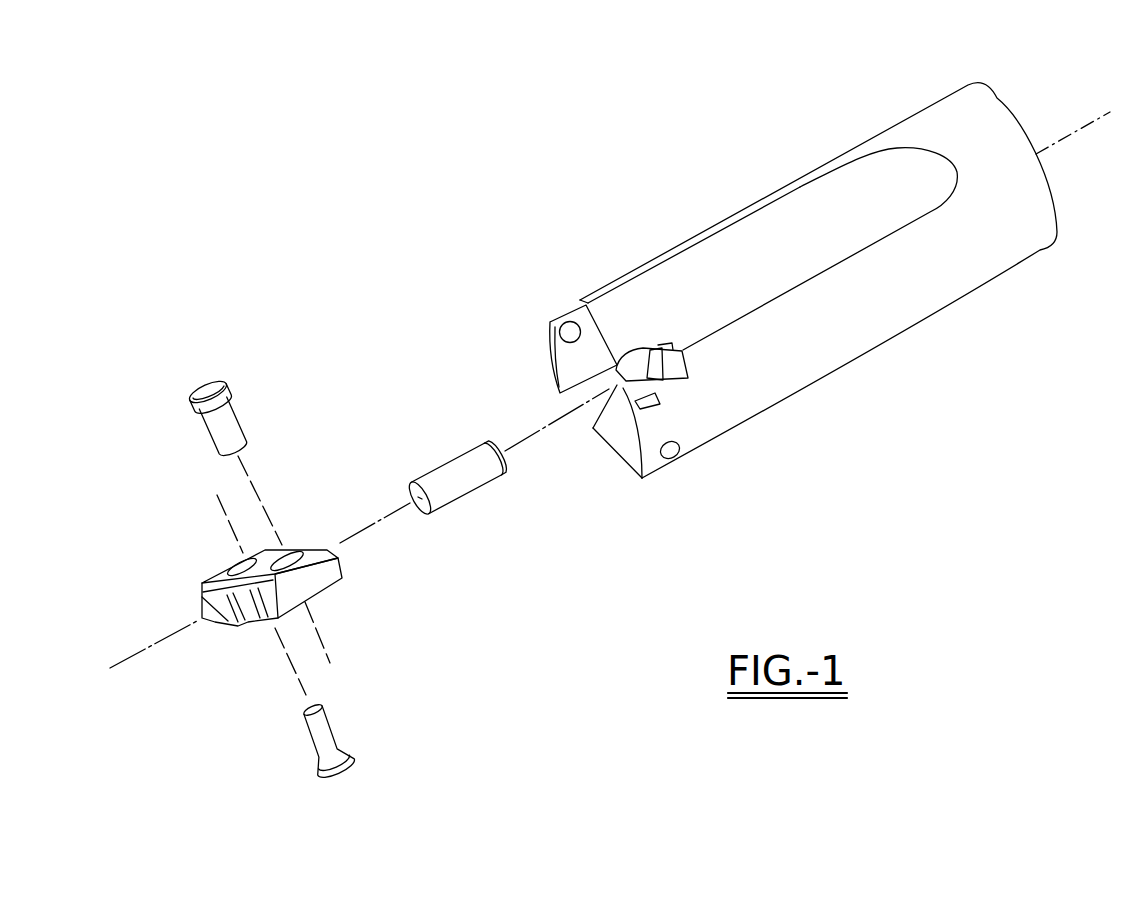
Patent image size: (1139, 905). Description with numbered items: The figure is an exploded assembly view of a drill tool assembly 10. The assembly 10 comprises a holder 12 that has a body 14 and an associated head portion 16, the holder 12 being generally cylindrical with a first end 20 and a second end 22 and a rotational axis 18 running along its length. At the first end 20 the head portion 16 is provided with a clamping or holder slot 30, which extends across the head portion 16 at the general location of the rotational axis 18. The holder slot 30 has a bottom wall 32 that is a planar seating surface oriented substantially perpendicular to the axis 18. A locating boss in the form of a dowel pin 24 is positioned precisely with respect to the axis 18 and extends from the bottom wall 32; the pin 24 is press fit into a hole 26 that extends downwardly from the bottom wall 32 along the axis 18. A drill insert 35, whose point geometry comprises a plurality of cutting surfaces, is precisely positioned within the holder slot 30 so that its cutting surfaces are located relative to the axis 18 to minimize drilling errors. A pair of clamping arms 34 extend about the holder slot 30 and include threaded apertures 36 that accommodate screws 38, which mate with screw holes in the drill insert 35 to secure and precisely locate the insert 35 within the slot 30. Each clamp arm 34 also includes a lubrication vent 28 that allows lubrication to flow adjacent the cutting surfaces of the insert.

The drill tool assembly 10 is at (533, 195).
The holder 12 is at (886, 345).
The body 14 is at (843, 150).
The head portion 16 is at (727, 432).
The rotational axis 18 is at (1067, 137).
The first end 20 is at (550, 350).
The second end 22 is at (997, 98).
The dowel pin 24 is at (460, 499).
The hole 26 is at (652, 353).
The lubrication vent 28 is at (570, 322).
The holder slot 30 is at (580, 395).
The bottom wall 32 is at (677, 372).
The clamping arms 34 is at (668, 268).
The drill insert 35 is at (209, 573).
The apertures 36 is at (669, 459).
The screws 38 is at (237, 423).